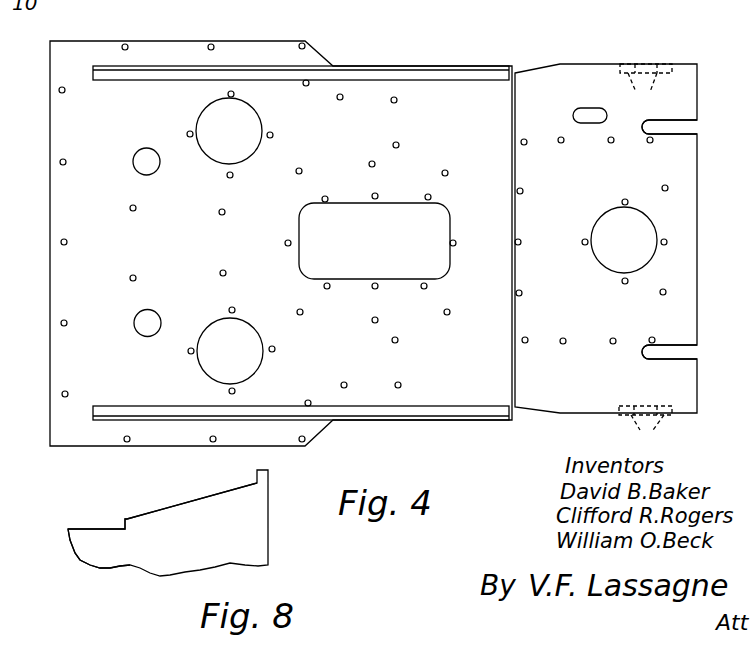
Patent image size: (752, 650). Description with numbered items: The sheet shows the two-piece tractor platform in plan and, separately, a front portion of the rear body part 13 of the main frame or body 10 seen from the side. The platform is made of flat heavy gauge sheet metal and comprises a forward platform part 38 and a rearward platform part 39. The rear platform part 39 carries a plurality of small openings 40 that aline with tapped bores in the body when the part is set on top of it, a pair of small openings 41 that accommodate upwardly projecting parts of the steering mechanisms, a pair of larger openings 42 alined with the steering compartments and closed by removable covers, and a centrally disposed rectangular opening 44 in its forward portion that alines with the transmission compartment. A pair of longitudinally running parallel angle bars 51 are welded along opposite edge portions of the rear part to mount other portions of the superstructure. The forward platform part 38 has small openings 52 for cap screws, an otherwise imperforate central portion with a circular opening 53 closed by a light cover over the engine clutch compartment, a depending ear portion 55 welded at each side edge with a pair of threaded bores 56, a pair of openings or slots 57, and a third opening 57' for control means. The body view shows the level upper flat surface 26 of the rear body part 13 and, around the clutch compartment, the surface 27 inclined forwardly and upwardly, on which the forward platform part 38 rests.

In FIG. 4, the forward platform part 38 is at (688, 165).
In FIG. 4, the rear platform part 39 is at (67, 367).
In FIG. 4, the small openings 40 is at (340, 94).
In FIG. 4, the small openings 41 is at (147, 320).
In FIG. 4, the larger openings 42 is at (230, 325).
In FIG. 4, the rectangular opening 44 is at (302, 237).
In FIG. 4, the angle bars 51 is at (446, 75).
In FIG. 4, the small openings 52 is at (527, 145).
In FIG. 4, the circular opening 53 is at (595, 250).
In FIG. 4, the depending ear portion 55 is at (644, 64).
In FIG. 4, the threaded bores 56 is at (646, 262).
In FIG. 4, the openings or slots 57 is at (691, 246).
In FIG. 4, the third opening 57' is at (583, 79).
In FIG. 8, the main frame or body 10 is at (84, 566).
In FIG. 8, the rear body part 13 is at (190, 565).
In FIG. 8, the upper flat surface 26 is at (97, 518).
In FIG. 8, the inclined surface 27 is at (172, 500).